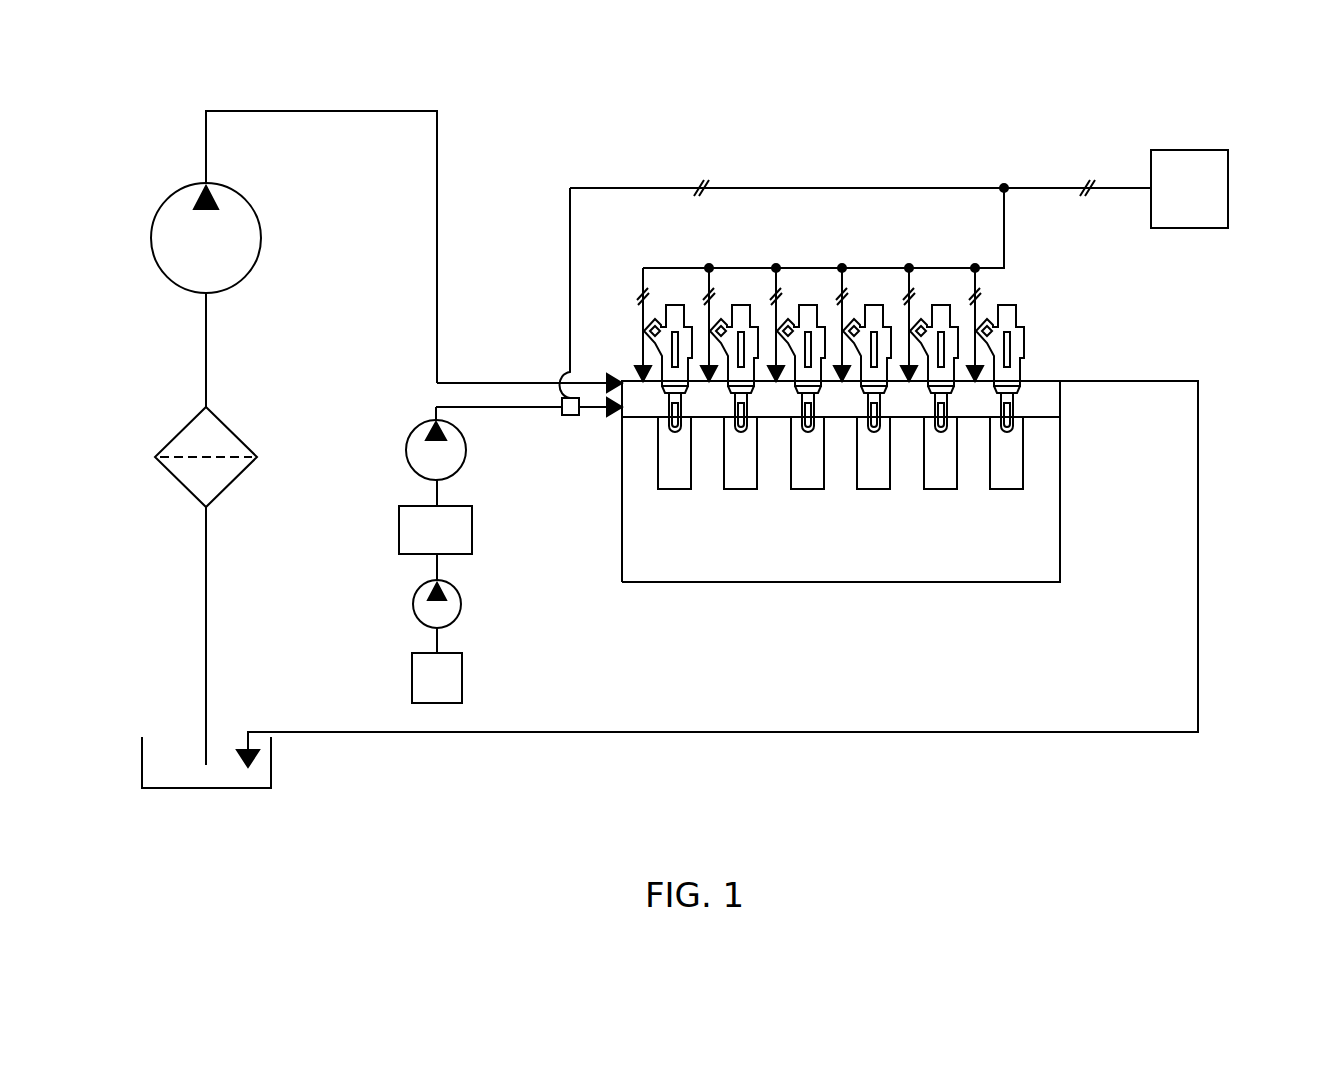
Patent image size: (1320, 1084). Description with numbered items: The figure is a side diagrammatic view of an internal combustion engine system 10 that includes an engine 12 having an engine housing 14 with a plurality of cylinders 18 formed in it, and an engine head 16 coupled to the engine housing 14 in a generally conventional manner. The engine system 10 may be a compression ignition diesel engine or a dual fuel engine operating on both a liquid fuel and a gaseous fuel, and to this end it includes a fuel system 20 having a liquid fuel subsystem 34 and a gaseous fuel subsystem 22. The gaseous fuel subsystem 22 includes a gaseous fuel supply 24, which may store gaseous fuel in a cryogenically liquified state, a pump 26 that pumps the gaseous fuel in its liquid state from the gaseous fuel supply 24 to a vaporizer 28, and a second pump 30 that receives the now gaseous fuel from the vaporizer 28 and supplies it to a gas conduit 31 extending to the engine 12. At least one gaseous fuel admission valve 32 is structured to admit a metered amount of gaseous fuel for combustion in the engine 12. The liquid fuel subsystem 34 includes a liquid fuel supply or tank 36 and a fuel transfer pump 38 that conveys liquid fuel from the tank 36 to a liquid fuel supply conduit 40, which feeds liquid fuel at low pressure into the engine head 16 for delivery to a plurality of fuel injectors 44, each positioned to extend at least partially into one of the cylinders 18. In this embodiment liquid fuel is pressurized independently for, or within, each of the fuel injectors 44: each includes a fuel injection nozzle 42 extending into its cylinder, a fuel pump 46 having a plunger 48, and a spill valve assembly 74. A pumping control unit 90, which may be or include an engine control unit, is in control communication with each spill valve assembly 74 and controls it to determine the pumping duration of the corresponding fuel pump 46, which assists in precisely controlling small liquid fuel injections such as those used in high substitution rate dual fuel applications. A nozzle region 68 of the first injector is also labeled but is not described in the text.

The internal combustion engine system 10 is at (1288, 146).
The engine 12 is at (1066, 477).
The engine housing 14 is at (1062, 563).
The engine head 16 is at (1038, 381).
The cylinders 18 is at (658, 485).
The fuel system 20 is at (561, 133).
The gaseous fuel subsystem 22 is at (495, 583).
The gaseous fuel supply 24 is at (412, 667).
The pump 26 is at (414, 600).
The vaporizer 28 is at (399, 520).
The second pump 30 is at (411, 434).
The gas conduit 31 is at (519, 408).
The gaseous fuel admission valve 32 is at (570, 416).
The liquid fuel subsystem 34 is at (462, 144).
The tank 36 is at (142, 760).
The fuel transfer pump 38 is at (157, 214).
The liquid fuel supply conduit 40 is at (518, 382).
The fuel injection nozzle 42 is at (691, 410).
The fuel injectors 44 is at (831, 375).
The fuel pump 46 is at (686, 316).
The plunger 48 is at (660, 350).
The injector nozzle 68 is at (676, 436).
The spill valve assembly 74 is at (648, 322).
The pumping control unit 90 is at (1186, 150).